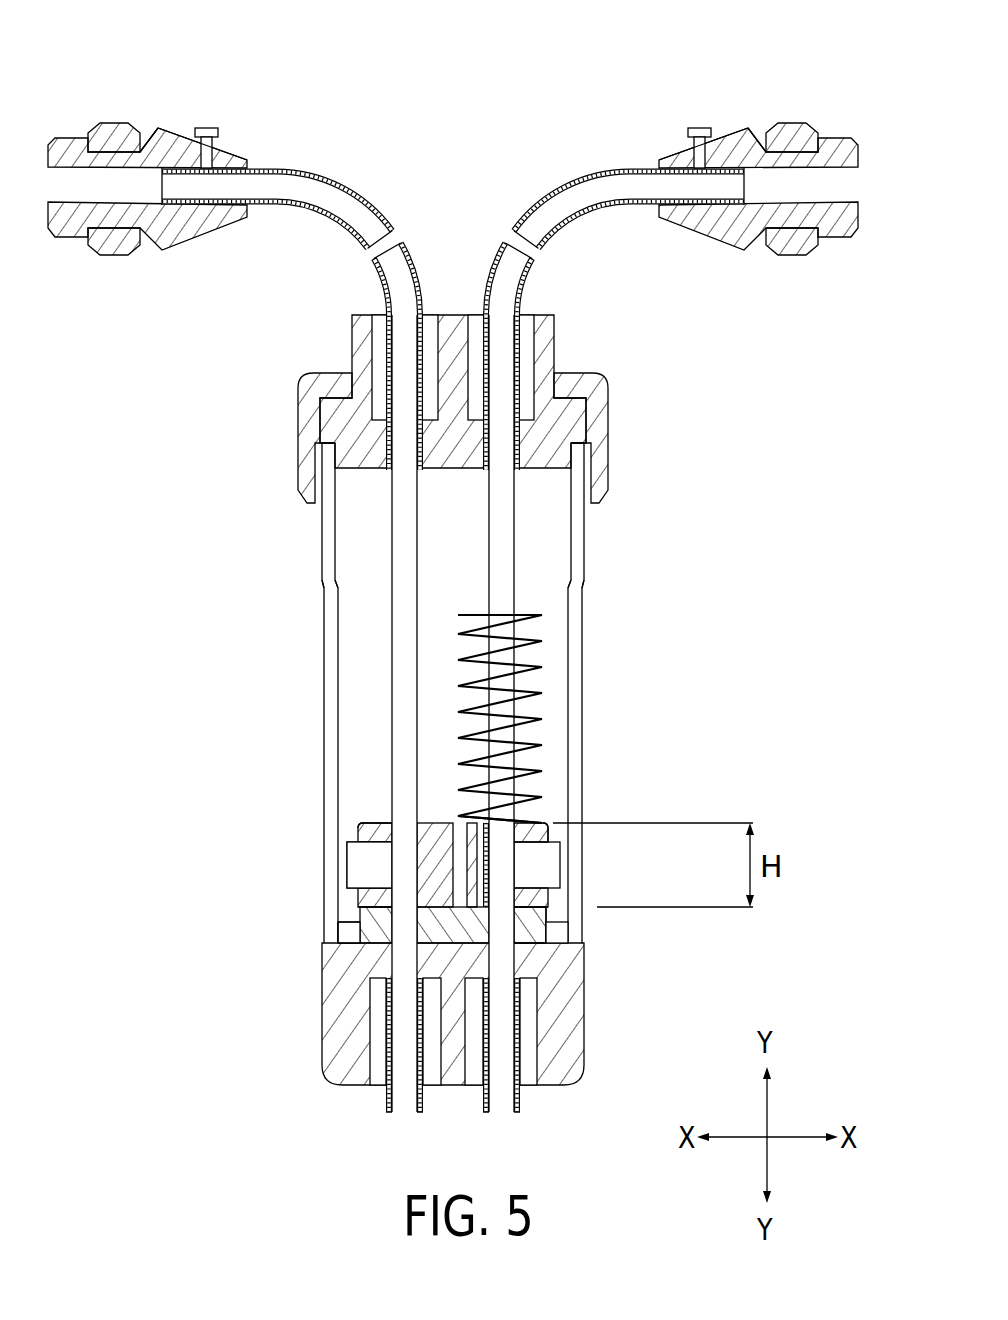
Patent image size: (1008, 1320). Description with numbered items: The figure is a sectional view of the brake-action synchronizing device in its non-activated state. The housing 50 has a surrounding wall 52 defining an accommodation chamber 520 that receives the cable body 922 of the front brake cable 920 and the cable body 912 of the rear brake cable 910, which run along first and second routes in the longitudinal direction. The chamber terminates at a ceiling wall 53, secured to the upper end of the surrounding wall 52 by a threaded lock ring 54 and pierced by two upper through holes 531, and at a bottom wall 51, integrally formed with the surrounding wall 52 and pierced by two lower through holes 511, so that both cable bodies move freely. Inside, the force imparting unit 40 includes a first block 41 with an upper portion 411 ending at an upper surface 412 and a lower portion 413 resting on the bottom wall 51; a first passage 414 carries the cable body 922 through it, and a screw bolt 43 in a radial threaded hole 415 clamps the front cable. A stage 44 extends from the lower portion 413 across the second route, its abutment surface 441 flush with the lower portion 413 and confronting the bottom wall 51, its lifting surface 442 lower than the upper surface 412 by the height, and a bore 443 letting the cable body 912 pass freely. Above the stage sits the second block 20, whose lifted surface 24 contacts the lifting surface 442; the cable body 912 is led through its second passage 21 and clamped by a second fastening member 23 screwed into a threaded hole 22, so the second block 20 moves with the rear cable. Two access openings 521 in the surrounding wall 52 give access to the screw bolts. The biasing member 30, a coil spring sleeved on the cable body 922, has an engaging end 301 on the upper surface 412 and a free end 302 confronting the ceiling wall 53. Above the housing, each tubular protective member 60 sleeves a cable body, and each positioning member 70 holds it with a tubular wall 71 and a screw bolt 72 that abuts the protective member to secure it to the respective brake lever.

The second block 20 is at (339, 835).
The second passage 21 is at (370, 811).
The threaded hole 22 is at (358, 892).
The second fastening member 23 is at (355, 860).
The lifted surface 24 is at (358, 924).
The biasing member 30 is at (572, 705).
The engaging end 301 is at (462, 822).
The free end 302 is at (540, 615).
The force imparting unit 40 is at (395, 881).
The first block 41 is at (570, 925).
The upper portion 411 is at (556, 838).
The upper surface 412 is at (548, 824).
The lower portion 413 is at (560, 946).
The first passage 414 is at (558, 935).
The threaded hole 415 is at (556, 905).
The first fastening member 43 is at (553, 867).
The stage 44 is at (320, 950).
The abutment surface 441 is at (258, 962).
The lifting surface 442 is at (357, 925).
The bore 443 is at (345, 948).
The housing 50 is at (452, 690).
The bottom wall 51 is at (455, 1014).
The lower through holes 511 is at (378, 1000).
The surrounding wall 52 is at (462, 693).
The accommodation chamber 520 is at (582, 578).
The access openings 521 is at (330, 607).
The ceiling wall 53 is at (453, 391).
The upper through holes 531 is at (318, 438).
The lock ring 54 is at (607, 390).
The tubular protective member 60 is at (333, 180).
The positioning member 70 is at (246, 137).
The tubular wall 71 is at (173, 147).
The screw bolt 72 is at (208, 126).
The rear brake cable 910 is at (320, 609).
The cable body 912 is at (407, 537).
The front brake cable 920 is at (589, 610).
The cable body 922 is at (498, 540).